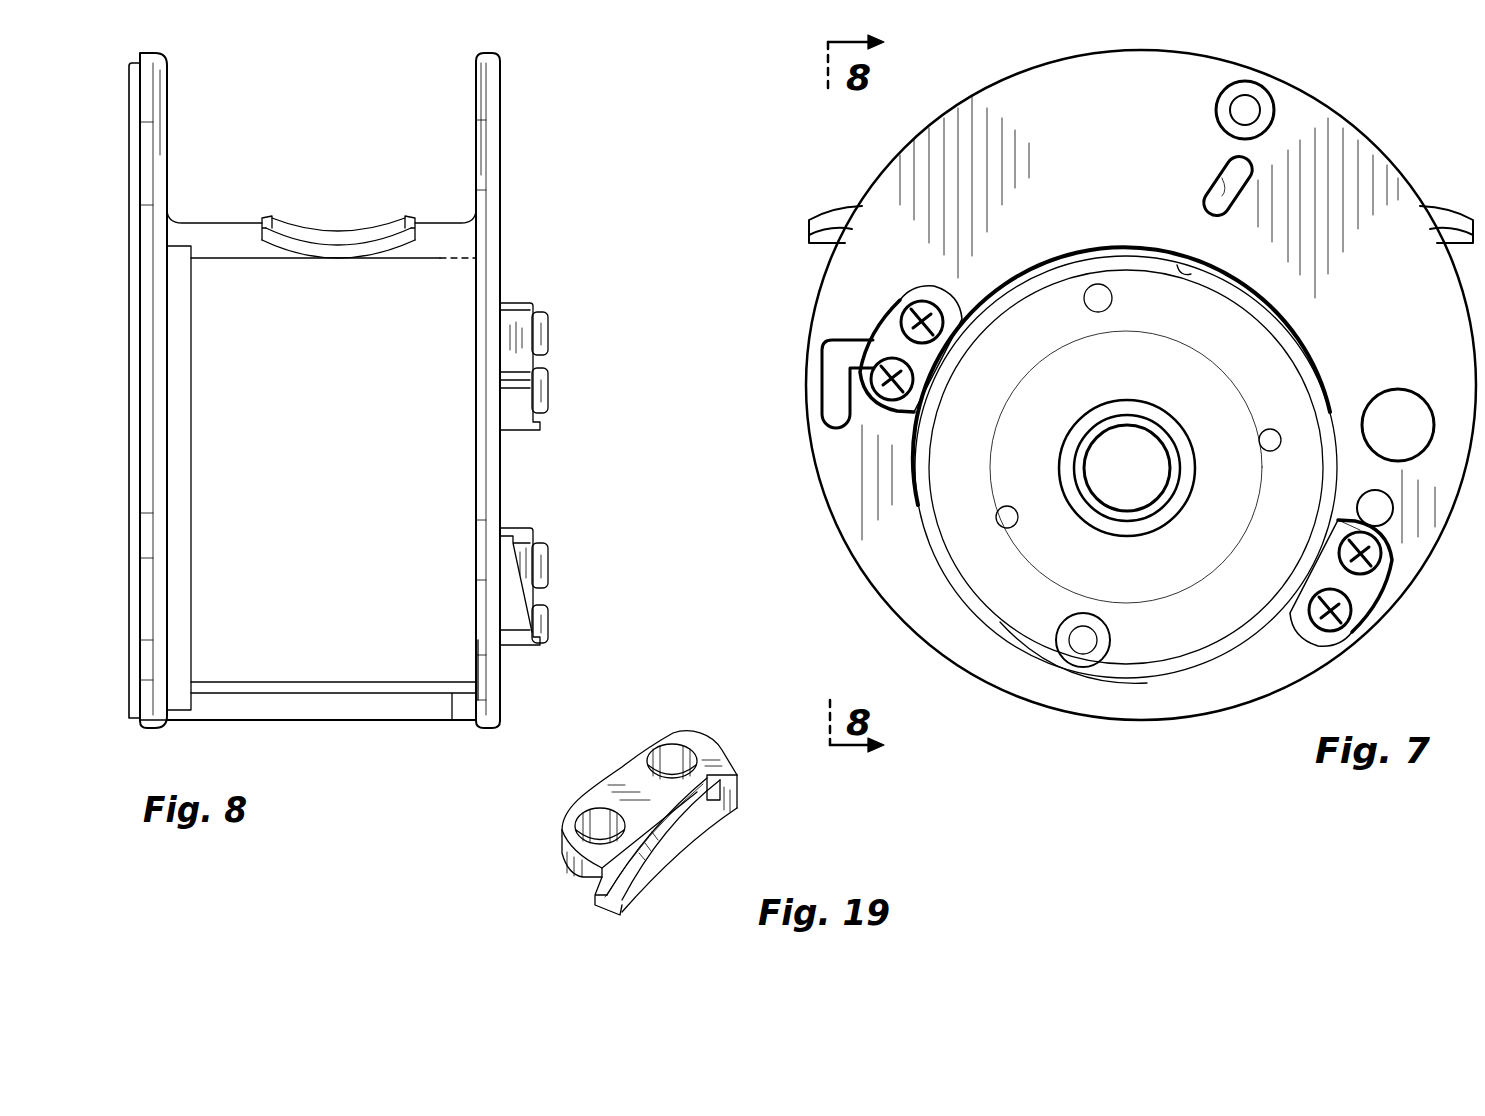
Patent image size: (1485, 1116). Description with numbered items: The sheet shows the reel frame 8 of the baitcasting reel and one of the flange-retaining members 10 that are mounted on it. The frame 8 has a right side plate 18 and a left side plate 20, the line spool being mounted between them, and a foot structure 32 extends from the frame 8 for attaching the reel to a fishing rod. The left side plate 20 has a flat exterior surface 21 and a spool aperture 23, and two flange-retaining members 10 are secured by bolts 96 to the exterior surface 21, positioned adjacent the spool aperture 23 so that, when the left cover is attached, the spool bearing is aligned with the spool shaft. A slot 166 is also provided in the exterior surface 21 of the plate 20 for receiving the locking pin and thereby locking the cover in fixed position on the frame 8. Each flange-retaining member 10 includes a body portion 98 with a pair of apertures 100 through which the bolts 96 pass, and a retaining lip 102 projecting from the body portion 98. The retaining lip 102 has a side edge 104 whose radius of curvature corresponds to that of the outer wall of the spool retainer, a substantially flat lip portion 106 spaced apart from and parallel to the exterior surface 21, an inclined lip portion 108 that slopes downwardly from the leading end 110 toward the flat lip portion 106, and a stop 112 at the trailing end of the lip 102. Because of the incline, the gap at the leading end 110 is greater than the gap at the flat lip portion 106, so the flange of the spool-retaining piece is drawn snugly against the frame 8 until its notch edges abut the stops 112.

In FIG. 8, the reel frame 8 is at (516, 140).
In FIG. 7, the reel frame 8 is at (1352, 114).
In FIG. 8, the flange-retaining member 10 is at (513, 303).
In FIG. 19, the flange-retaining member 10 is at (651, 797).
In FIG. 7, the flange-retaining member 10 is at (935, 302).
In FIG. 8, the right side plate 18 is at (153, 100).
In FIG. 8, the left side plate 20 is at (482, 105).
In FIG. 7, the left side plate 20 is at (1367, 167).
In FIG. 8, the exterior surface 21 is at (501, 180).
In FIG. 7, the exterior surface 21 is at (1033, 95).
In FIG. 8, the spool aperture 23 is at (476, 672).
In FIG. 7, the spool aperture 23 is at (1192, 272).
In FIG. 8, the foot structure 32 is at (351, 258).
In FIG. 7, the foot structure 32 is at (830, 218).
In FIG. 8, the bolts 96 is at (548, 392).
In FIG. 7, the bolts 96 is at (888, 352).
In FIG. 19, the body portion 98 is at (622, 783).
In FIG. 19, the apertures 100 is at (674, 757).
In FIG. 19, the retaining lip 102 is at (683, 846).
In FIG. 19, the side edge 104 is at (636, 838).
In FIG. 7, the side edge 104 is at (918, 380).
In FIG. 19, the substantially flat lip portion 106 is at (683, 820).
In FIG. 19, the inclined lip portion 108 is at (630, 893).
In FIG. 19, the leading end 110 is at (604, 908).
In FIG. 19, the stop 112 is at (728, 776).
In FIG. 7, the slot 166 is at (1221, 190).